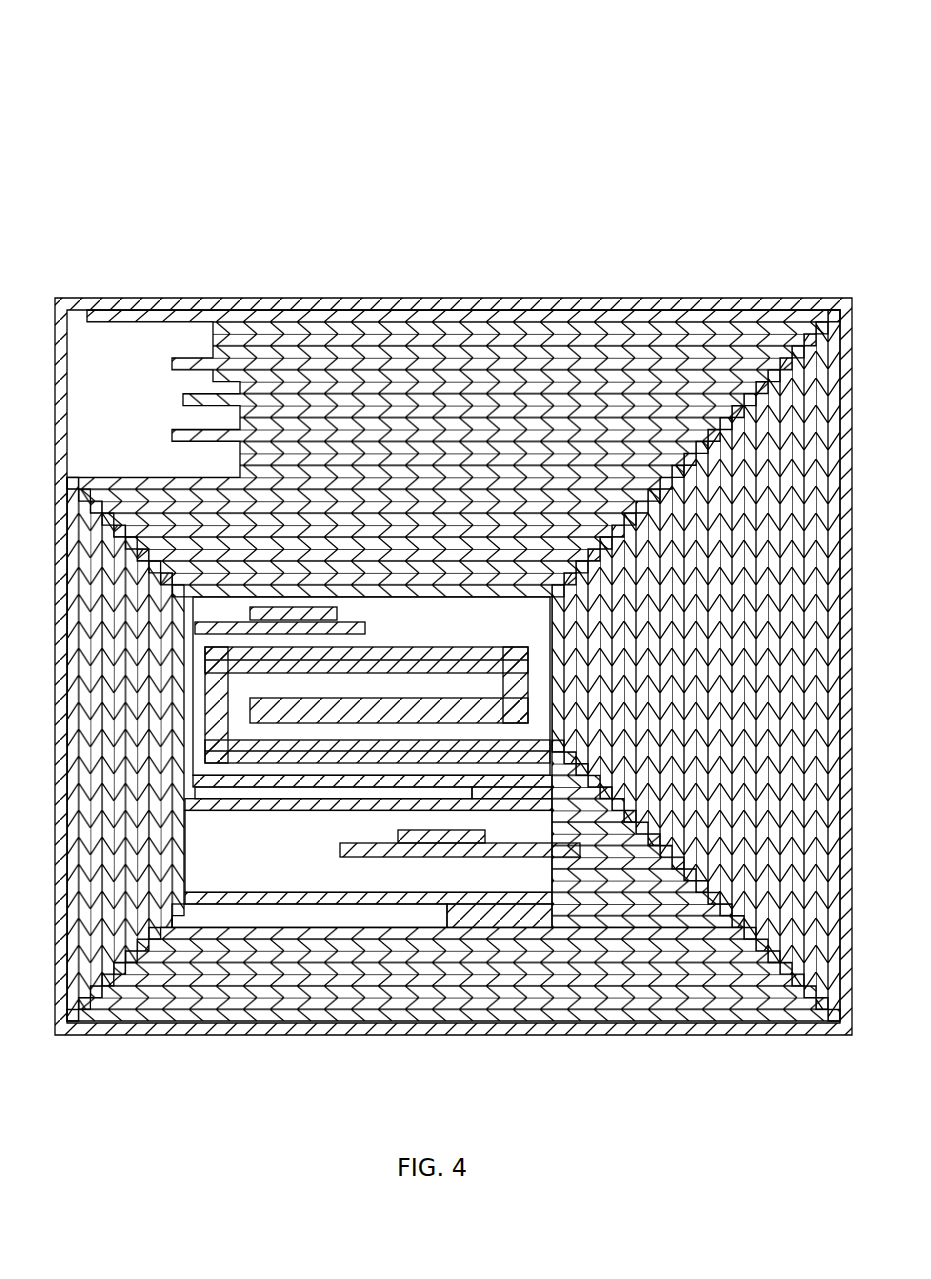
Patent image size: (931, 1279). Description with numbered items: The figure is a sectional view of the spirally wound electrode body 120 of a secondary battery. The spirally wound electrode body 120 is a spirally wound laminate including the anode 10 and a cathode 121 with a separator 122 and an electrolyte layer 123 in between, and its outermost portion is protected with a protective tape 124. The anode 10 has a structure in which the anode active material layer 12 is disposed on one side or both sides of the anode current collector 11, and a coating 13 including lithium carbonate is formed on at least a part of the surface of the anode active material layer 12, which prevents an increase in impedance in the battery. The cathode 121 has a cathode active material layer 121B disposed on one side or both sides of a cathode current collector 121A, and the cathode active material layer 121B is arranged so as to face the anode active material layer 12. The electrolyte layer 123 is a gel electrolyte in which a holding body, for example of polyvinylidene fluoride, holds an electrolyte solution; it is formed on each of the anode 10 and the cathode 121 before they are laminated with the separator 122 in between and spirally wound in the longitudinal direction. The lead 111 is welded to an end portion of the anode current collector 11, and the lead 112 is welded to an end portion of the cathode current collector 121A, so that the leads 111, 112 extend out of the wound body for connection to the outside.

The spirally wound electrode body 120 is at (453, 551).
The anode 10 is at (453, 608).
The anode current collector 11 is at (173, 318).
The anode active material layer 12 is at (263, 470).
The coating 13 is at (334, 458).
The cathode 121 is at (510, 264).
The cathode current collector 121A is at (415, 383).
The cathode active material layer 121B is at (545, 410).
The separator 122 is at (597, 440).
The electrolyte layer 123 is at (685, 447).
The protective tape 124 is at (802, 306).
The lead 111 is at (430, 836).
The lead 112 is at (268, 616).